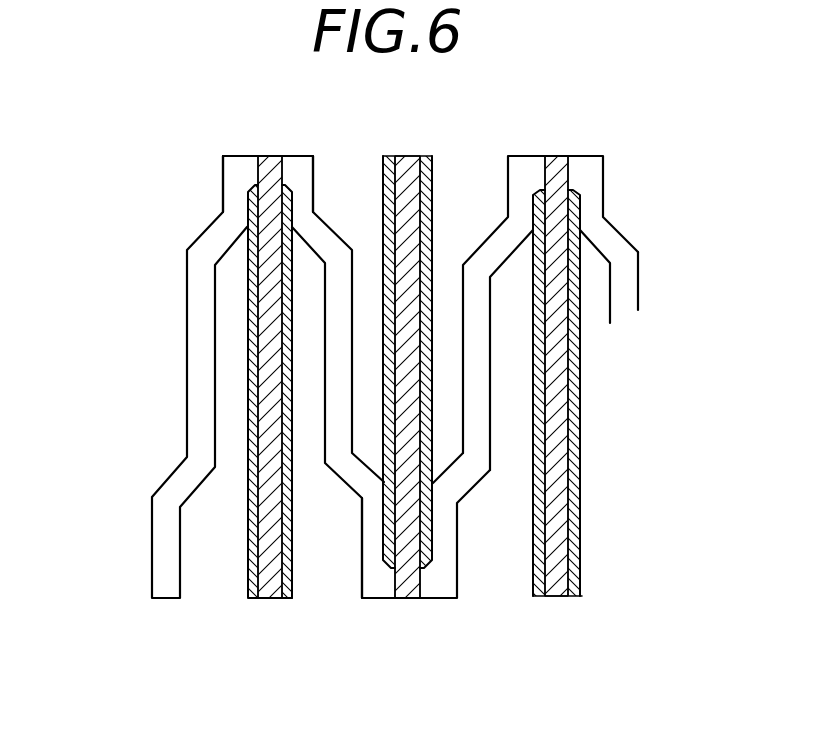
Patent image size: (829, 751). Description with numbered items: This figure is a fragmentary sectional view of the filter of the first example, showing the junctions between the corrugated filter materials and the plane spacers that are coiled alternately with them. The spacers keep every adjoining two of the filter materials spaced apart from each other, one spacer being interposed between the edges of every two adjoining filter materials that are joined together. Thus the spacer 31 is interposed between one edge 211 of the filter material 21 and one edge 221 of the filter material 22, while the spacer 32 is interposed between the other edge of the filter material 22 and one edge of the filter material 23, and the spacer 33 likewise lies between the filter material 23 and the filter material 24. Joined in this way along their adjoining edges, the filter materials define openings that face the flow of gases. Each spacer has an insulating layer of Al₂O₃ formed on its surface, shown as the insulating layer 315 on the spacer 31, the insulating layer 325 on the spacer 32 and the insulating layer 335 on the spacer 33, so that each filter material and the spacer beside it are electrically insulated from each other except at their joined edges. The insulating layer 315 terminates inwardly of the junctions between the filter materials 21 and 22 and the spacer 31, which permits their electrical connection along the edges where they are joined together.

The filter material 21 is at (201, 367).
The edge of filter material 211 is at (231, 188).
The edge of filter material 221 is at (311, 183).
The filter material 22 is at (358, 472).
The filter material 23 is at (478, 476).
The filter material 24 is at (622, 284).
The spacer 31 is at (198, 374).
The insulating layer 315 is at (250, 323).
The spacer 32 is at (462, 345).
The insulating layer 325 is at (430, 207).
The spacer 33 is at (619, 376).
The insulating layer 335 is at (575, 388).